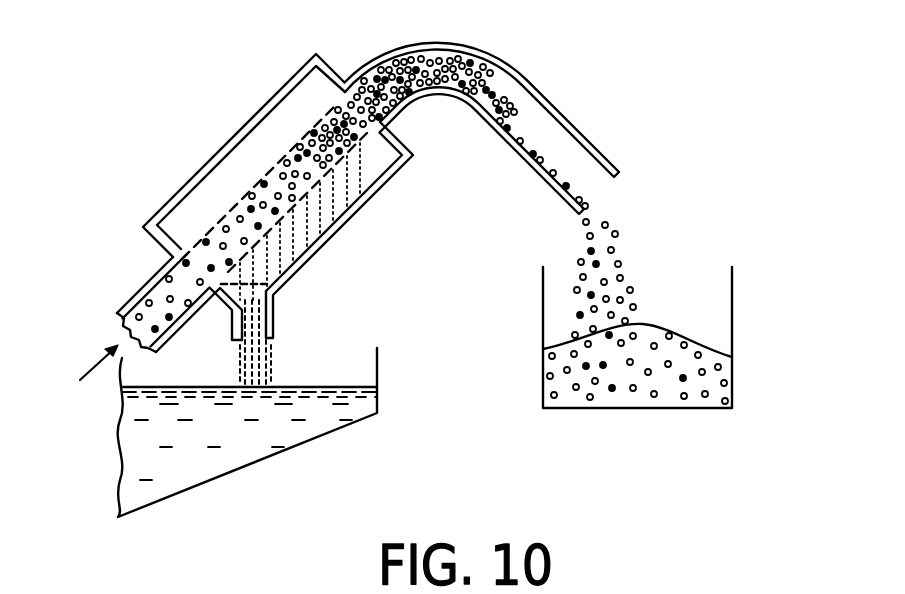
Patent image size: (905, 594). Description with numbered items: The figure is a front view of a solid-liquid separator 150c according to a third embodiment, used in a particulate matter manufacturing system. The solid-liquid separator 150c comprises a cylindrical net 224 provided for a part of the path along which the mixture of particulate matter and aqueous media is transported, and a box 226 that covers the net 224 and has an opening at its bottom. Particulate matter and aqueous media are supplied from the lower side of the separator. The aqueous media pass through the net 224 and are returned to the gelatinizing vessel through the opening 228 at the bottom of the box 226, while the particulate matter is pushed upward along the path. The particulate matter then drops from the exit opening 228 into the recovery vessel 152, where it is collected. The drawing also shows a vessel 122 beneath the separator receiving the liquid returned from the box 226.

The solid-liquid separator 150c is at (661, 115).
The cylindrical net 224 is at (283, 162).
The box 226 is at (178, 194).
The opening 228 is at (625, 181).
The recovery vessel 152 is at (732, 380).
The liquid tank 122 is at (309, 433).